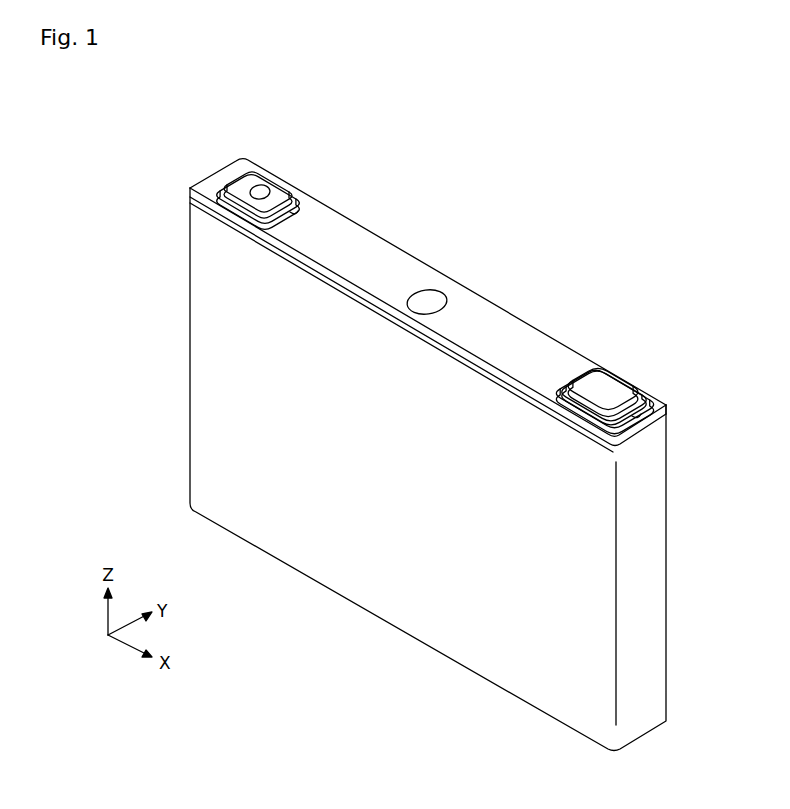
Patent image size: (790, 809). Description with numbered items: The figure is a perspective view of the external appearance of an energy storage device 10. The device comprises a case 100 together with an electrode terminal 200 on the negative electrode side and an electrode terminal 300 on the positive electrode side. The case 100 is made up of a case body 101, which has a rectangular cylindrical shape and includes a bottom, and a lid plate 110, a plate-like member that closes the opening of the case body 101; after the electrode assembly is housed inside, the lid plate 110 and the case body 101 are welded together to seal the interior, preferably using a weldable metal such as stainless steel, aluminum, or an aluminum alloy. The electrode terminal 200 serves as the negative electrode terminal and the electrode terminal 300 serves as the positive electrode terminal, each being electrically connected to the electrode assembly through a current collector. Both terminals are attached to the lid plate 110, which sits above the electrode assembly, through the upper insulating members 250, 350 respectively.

The energy storage device 10 is at (503, 204).
The case 100 is at (118, 306).
The lid plate 110 is at (282, 250).
The case body 101 is at (273, 337).
The electrode terminal 200 is at (262, 178).
The upper insulating member 250 is at (298, 212).
The electrode terminal 300 is at (613, 378).
The upper insulating member 350 is at (652, 403).